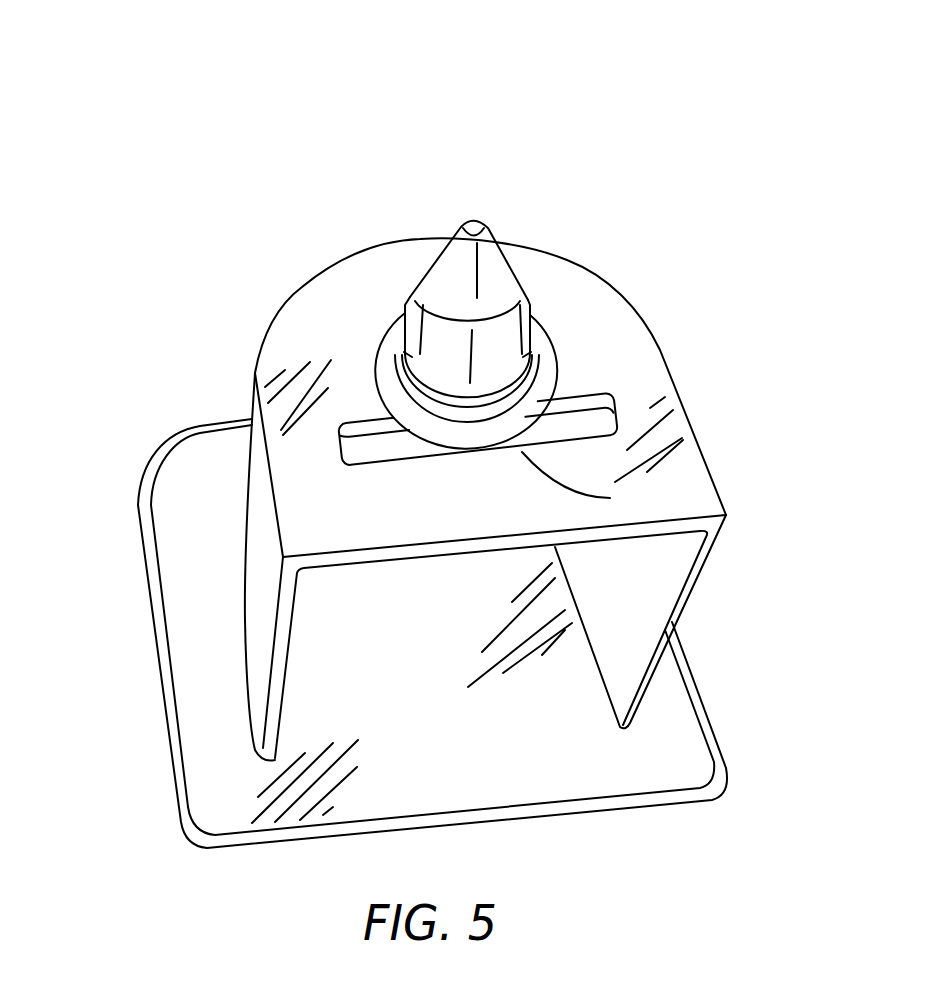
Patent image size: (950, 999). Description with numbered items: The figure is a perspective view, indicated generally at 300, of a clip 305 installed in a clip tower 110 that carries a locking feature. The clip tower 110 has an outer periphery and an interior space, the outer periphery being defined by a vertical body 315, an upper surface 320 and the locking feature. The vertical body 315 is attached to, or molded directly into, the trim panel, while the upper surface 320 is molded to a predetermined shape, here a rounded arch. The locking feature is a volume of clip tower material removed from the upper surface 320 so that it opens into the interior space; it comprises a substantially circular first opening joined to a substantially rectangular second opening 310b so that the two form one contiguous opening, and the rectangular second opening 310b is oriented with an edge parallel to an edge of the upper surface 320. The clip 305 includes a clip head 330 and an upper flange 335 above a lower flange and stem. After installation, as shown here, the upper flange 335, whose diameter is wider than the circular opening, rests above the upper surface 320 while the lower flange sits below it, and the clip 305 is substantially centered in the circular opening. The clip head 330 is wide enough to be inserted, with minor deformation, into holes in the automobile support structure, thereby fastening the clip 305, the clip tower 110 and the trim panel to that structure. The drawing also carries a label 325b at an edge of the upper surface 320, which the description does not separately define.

The clip assembly 300 is at (112, 85).
The clip 305 is at (441, 202).
The clip head 330 is at (495, 250).
The upper flange 335 is at (545, 348).
The upper surface 320 is at (345, 278).
The second opening 310b is at (610, 417).
The edge 325b is at (610, 498).
The clip tower 110 is at (178, 366).
The vertical body 315 is at (250, 628).